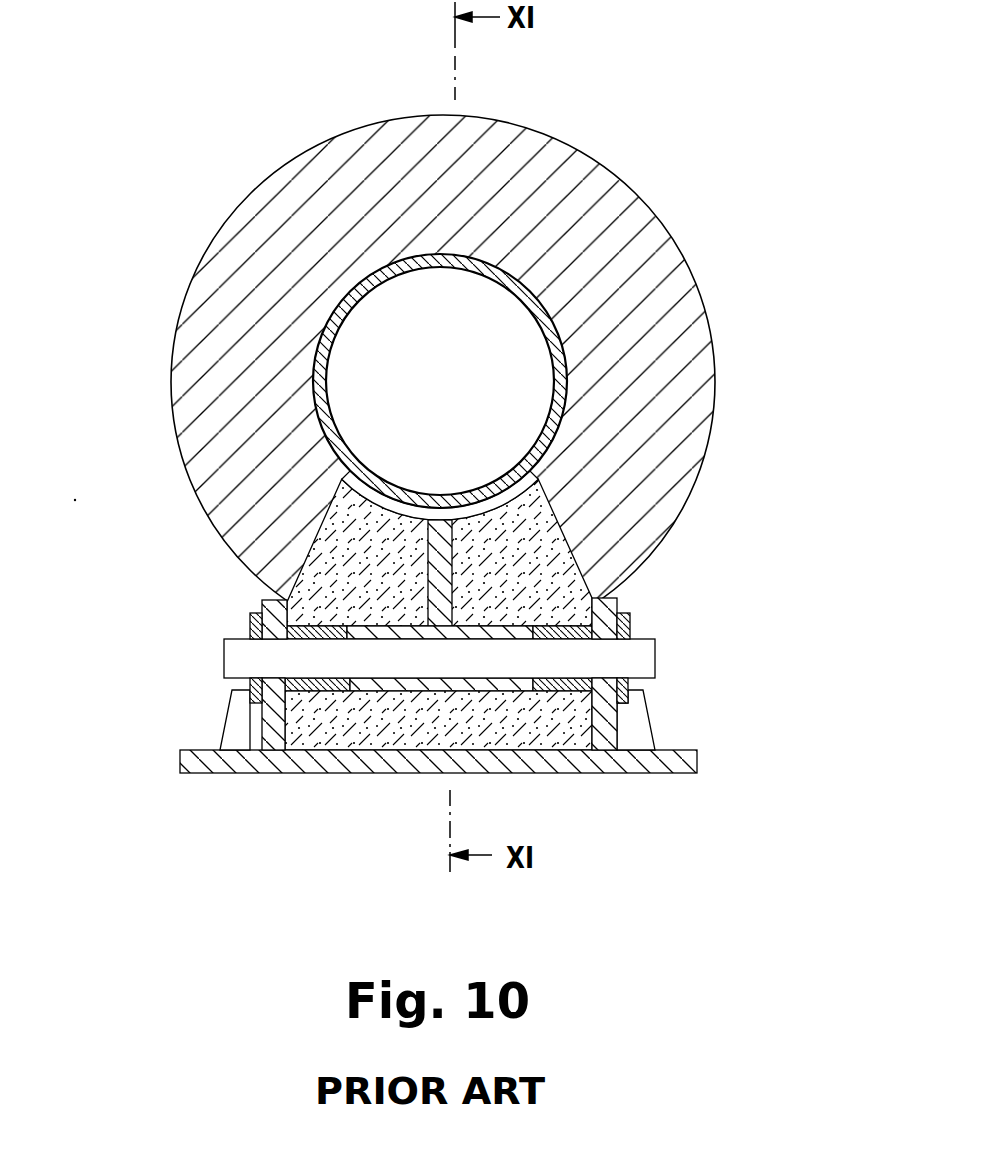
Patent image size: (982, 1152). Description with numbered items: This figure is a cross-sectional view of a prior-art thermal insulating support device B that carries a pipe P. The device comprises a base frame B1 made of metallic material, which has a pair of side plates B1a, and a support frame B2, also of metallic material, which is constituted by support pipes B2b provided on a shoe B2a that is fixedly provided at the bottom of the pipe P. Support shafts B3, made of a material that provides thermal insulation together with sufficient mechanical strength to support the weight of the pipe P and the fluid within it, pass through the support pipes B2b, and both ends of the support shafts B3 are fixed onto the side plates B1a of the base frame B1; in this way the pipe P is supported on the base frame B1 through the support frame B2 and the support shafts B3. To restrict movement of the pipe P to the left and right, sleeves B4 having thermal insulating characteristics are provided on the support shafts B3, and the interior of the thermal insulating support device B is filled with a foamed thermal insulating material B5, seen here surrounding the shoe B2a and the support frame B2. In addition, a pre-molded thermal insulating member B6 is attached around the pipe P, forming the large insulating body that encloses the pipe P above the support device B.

The thermal insulating support device B is at (450, 477).
The base frame B1 is at (409, 686).
The side plates B1a is at (262, 603).
The support frame B2 is at (567, 671).
The shoe B2a is at (440, 560).
The support pipes B2b is at (397, 683).
The support shafts B3 is at (205, 657).
The sleeves B4 is at (303, 693).
The foamed thermal insulating material B5 is at (347, 548).
The pre-molded thermal insulating member B6 is at (270, 206).
The pipe P is at (578, 376).